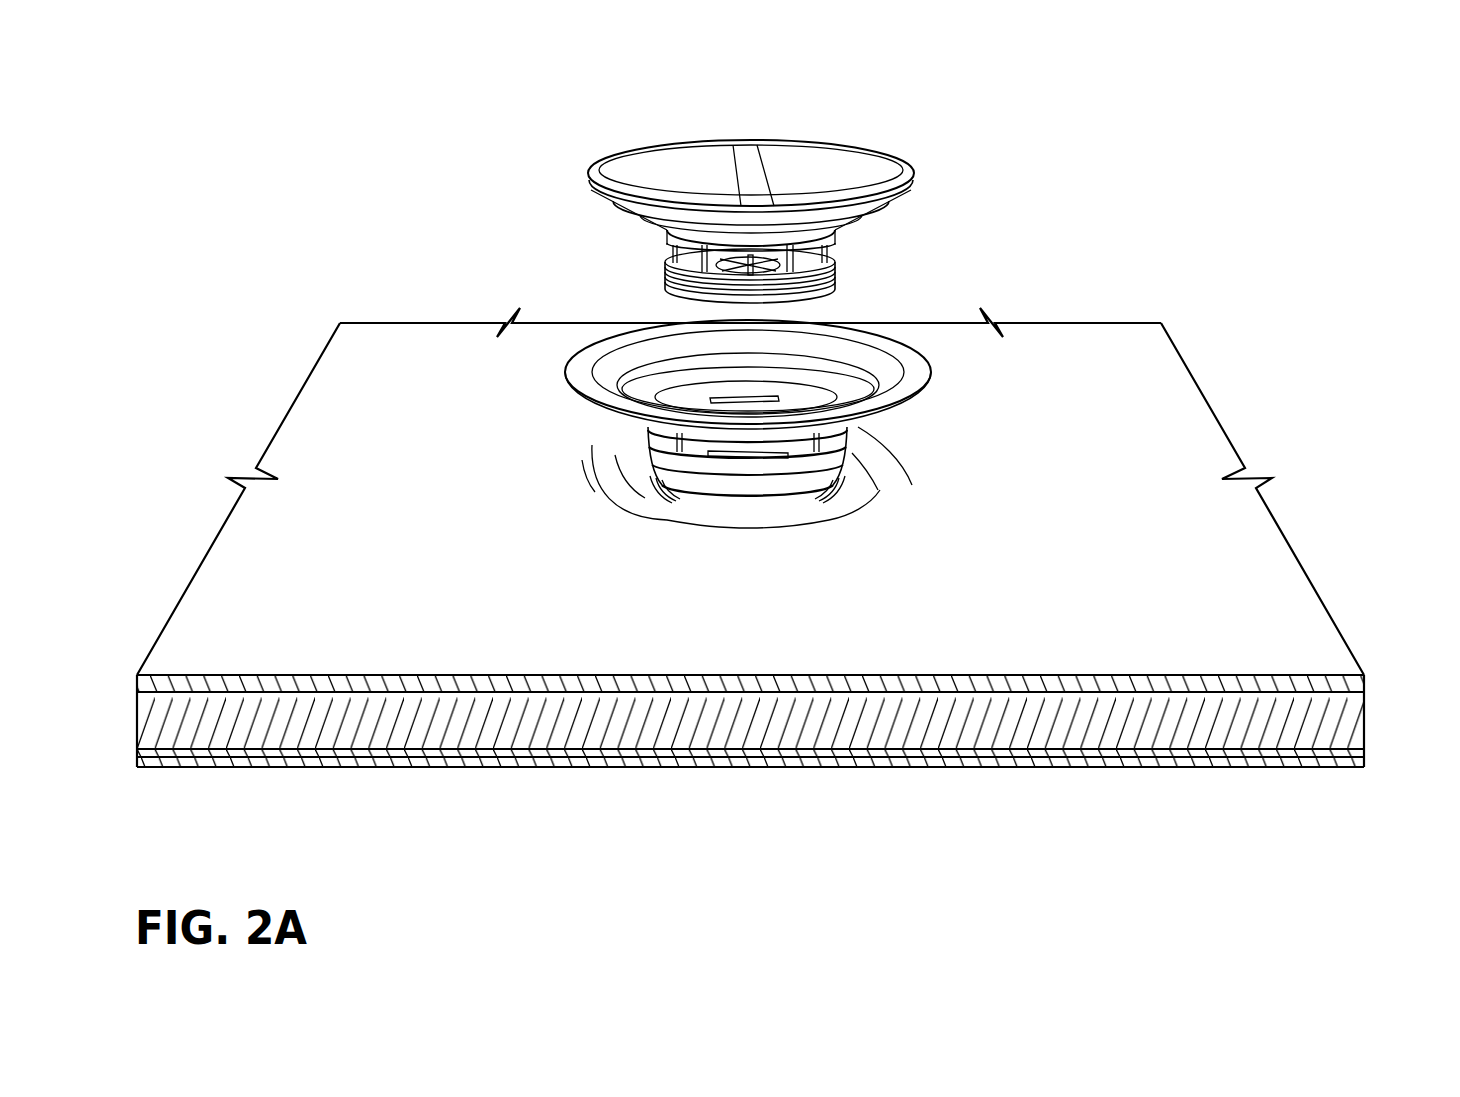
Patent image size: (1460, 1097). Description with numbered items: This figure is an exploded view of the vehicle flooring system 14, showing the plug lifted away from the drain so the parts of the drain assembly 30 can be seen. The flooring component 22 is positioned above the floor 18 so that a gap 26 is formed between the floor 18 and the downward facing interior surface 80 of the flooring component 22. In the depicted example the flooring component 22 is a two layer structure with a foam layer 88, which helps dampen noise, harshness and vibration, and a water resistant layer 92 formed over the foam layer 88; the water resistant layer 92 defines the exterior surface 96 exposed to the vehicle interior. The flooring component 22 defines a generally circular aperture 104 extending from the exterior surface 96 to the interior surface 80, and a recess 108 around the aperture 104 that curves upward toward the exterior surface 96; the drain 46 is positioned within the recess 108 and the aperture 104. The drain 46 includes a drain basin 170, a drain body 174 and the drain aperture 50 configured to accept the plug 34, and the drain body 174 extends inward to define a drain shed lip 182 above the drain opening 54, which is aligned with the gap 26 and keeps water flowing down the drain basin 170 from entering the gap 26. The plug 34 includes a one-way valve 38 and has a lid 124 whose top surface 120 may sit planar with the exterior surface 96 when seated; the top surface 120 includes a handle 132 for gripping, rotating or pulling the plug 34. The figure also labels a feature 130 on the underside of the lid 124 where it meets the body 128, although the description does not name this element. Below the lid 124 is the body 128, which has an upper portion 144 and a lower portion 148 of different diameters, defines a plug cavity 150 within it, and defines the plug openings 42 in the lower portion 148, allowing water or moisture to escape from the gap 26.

The vehicle flooring system 14 is at (1226, 283).
The floor 18 is at (1360, 762).
The flooring component 22 is at (131, 673).
The gap 26 is at (1366, 750).
The drain assembly 30 is at (906, 232).
The plug 34 is at (759, 180).
The one-way valve 38 is at (741, 255).
The plug opening 42 is at (667, 282).
The drain 46 is at (917, 375).
The drain aperture 50 is at (736, 460).
The drain opening 54 is at (753, 407).
The interior surface 80 is at (872, 757).
The foam layer 88 is at (1366, 713).
The water resistant layer 92 is at (1366, 682).
The exterior surface 96 is at (1265, 607).
The aperture 104 is at (737, 540).
The recess 108 is at (888, 467).
The top surface 120 is at (838, 183).
The lid 124 is at (922, 190).
The body 128 is at (648, 253).
The bowl outer surface 130 is at (640, 222).
The handle 132 is at (748, 158).
The upper portion 144 is at (841, 252).
The lower portion 148 is at (843, 285).
The plug cavity 150 is at (763, 256).
The drain basin 170 is at (890, 378).
The drain body 174 is at (686, 468).
The drain shed lip 182 is at (686, 406).